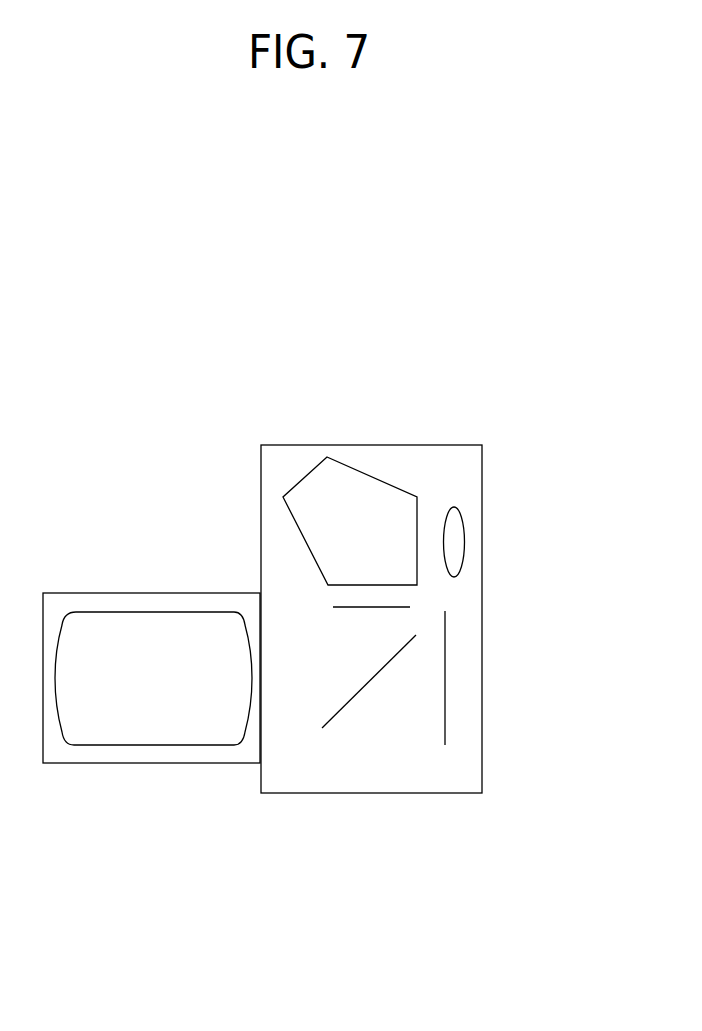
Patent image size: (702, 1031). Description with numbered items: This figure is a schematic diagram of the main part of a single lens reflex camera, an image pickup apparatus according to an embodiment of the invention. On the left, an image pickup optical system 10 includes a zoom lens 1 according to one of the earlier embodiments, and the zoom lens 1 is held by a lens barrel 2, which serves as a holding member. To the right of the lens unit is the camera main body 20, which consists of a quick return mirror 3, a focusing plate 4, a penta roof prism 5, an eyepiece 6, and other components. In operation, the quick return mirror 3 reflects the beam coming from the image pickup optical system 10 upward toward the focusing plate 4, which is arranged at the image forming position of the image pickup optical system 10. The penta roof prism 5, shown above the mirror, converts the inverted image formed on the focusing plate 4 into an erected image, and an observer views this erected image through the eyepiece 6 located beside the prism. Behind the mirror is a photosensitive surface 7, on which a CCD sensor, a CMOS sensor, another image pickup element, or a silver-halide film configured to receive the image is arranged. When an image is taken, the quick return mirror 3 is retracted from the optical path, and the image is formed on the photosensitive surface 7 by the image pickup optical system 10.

The zoom lens 1 is at (137, 612).
The lens barrel 2 is at (153, 765).
The quick return mirror 3 is at (356, 698).
The focusing plate 4 is at (350, 607).
The penta roof prism 5 is at (303, 477).
The eyepiece 6 is at (463, 515).
The photosensitive surface 7 is at (445, 668).
The image pickup optical system 10 is at (187, 573).
The camera main body 20 is at (345, 418).